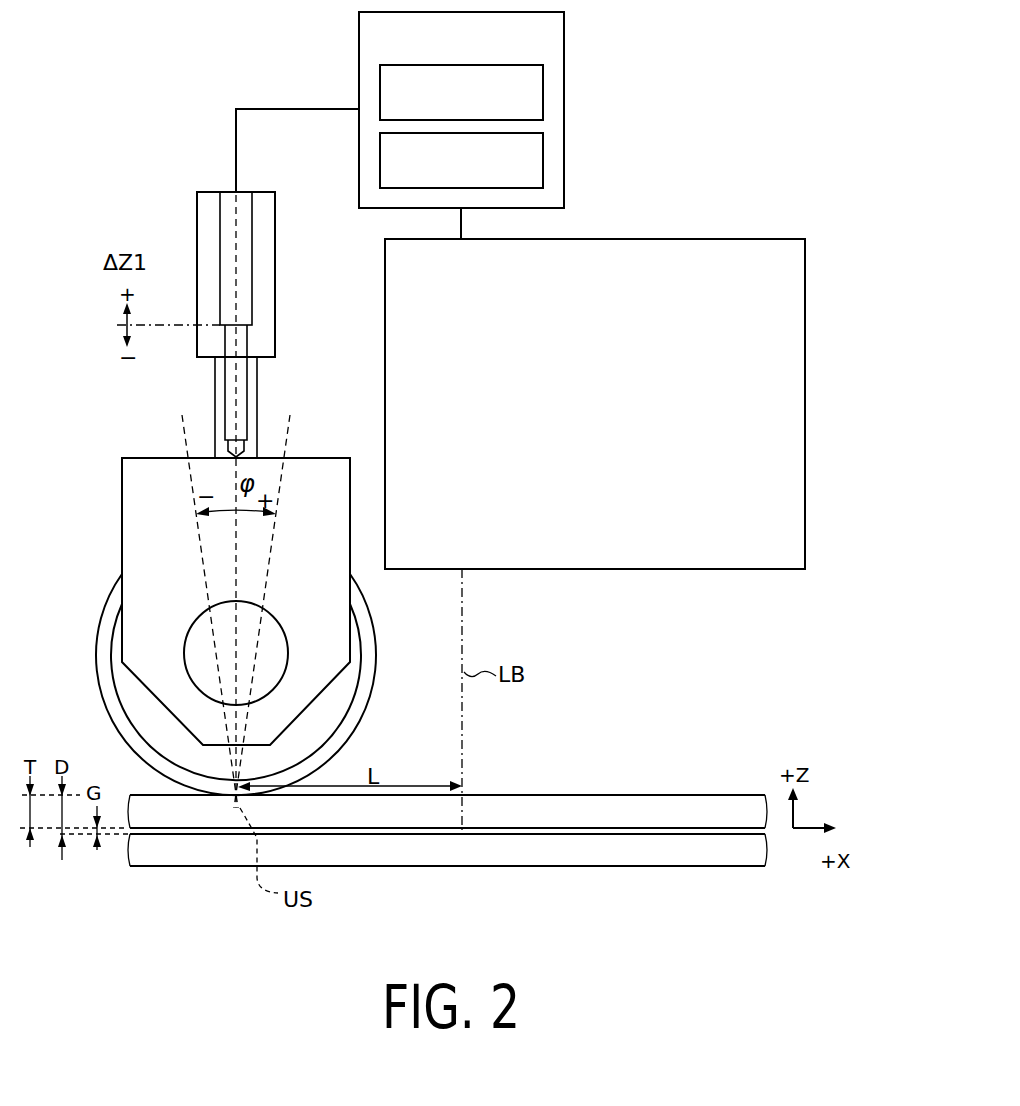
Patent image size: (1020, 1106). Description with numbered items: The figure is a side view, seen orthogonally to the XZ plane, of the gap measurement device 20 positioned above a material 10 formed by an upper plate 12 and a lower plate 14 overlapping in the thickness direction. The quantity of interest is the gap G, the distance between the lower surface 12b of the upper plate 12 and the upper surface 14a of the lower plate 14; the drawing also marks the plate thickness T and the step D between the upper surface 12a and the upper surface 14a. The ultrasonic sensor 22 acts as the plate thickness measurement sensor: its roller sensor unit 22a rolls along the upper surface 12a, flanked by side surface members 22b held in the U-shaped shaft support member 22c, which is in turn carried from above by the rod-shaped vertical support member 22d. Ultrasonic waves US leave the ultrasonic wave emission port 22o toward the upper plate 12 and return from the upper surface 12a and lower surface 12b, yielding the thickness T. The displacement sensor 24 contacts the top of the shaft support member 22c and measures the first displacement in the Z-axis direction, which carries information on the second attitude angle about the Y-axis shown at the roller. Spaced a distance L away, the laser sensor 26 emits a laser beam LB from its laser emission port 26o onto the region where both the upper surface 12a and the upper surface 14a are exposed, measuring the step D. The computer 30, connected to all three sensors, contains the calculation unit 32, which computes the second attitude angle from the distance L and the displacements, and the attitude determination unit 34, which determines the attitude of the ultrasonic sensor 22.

The material 10 is at (722, 782).
The upper plate 12 is at (680, 812).
The upper surface of the upper plate 12a is at (633, 796).
The lower surface of the upper plate 12b is at (578, 832).
The lower plate 14 is at (731, 848).
The upper surface of the lower plate 14a is at (604, 836).
The gap measurement device 20 is at (114, 94).
The ultrasonic sensor 22 is at (82, 678).
The roller sensor unit 22a is at (104, 605).
The side surface members 22b is at (145, 702).
The shaft support member 22c is at (120, 465).
The vertical support member 22d is at (262, 270).
The ultrasonic wave emission port 22o is at (237, 797).
The displacement sensor 24 is at (232, 383).
The laser sensor 26 is at (668, 253).
The laser emission port 26o is at (463, 573).
The computer 30 is at (565, 16).
The calculation unit 32 is at (544, 91).
The attitude determination unit 34 is at (544, 158).